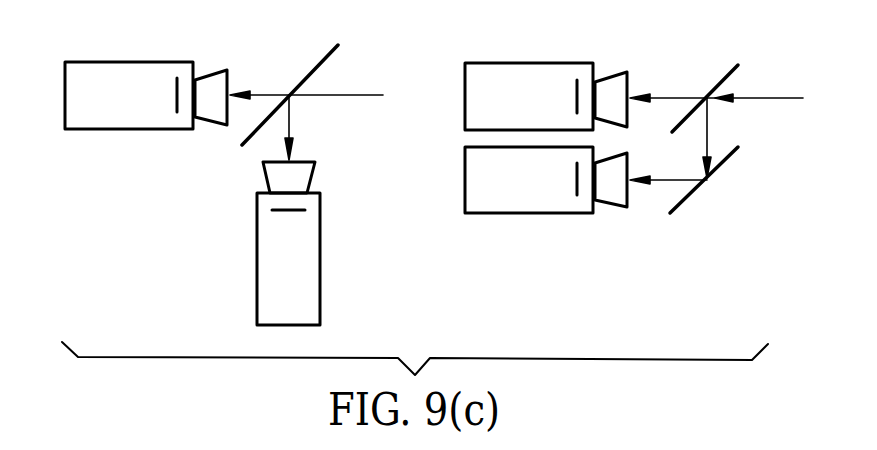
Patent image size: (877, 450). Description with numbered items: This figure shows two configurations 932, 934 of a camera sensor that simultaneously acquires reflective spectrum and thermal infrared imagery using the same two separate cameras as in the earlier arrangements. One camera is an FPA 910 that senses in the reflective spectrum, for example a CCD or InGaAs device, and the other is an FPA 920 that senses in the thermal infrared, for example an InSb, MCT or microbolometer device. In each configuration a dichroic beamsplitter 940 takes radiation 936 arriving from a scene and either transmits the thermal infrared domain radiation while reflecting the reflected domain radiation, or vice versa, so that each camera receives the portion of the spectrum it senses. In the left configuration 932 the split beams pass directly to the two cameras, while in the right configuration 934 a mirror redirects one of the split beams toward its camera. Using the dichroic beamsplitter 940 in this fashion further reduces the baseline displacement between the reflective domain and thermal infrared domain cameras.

The FPA 910 is at (65, 102).
The FPA 920 is at (258, 268).
The configuration 932 is at (158, 207).
The configuration 934 is at (591, 236).
The radiation 936 is at (347, 95).
The dichroic beamsplitter 940 is at (321, 65).